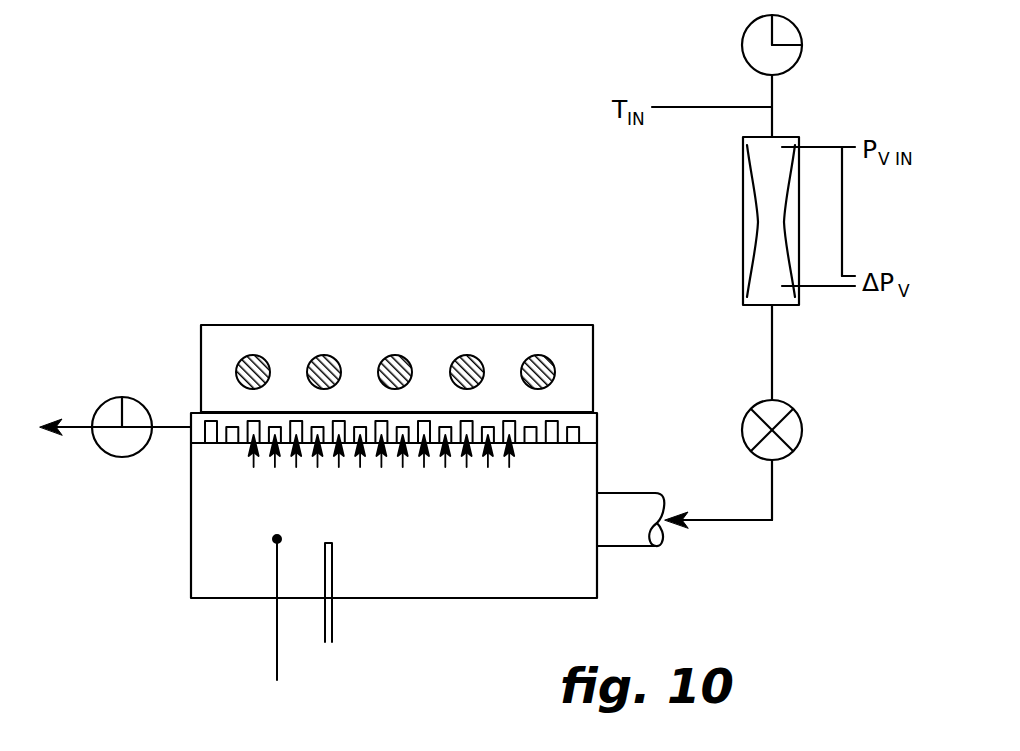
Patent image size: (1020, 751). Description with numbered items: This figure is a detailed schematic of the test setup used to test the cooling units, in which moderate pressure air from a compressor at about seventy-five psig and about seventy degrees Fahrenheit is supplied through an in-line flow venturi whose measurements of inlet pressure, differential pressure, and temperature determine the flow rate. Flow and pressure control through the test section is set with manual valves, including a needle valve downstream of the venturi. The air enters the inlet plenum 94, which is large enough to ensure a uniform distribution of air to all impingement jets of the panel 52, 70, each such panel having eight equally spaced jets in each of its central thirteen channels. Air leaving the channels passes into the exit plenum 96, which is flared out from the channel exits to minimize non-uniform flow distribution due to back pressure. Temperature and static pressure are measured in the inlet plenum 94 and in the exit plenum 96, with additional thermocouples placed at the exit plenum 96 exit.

The exit plenum 96 is at (217, 336).
The panel 52 is at (463, 393).
The panel 70 is at (594, 423).
The inlet plenum 94 is at (200, 553).